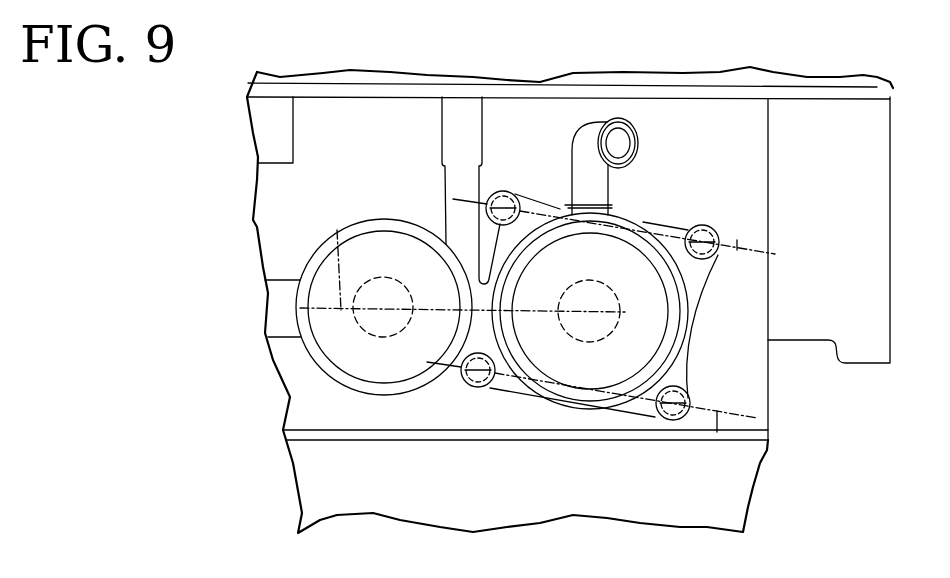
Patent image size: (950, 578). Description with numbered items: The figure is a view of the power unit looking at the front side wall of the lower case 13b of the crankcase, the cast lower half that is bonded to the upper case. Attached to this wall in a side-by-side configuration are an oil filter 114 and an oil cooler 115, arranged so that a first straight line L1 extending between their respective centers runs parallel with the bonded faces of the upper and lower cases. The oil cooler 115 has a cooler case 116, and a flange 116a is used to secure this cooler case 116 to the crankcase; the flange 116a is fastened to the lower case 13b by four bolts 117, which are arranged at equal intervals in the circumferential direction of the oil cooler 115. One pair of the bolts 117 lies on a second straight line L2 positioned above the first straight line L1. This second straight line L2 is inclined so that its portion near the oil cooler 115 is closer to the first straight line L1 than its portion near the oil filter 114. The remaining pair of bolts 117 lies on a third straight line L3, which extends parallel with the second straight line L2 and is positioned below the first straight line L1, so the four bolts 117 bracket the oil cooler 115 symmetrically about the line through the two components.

The lower case 13b is at (700, 115).
The oil filter 114 is at (370, 250).
The oil cooler 115 is at (631, 210).
The cooler case 116 is at (650, 317).
The flange 116a is at (692, 269).
The bolts 117 is at (505, 191).
The first straight line L1 is at (333, 223).
The second straight line L2 is at (737, 242).
The third straight line L3 is at (716, 440).